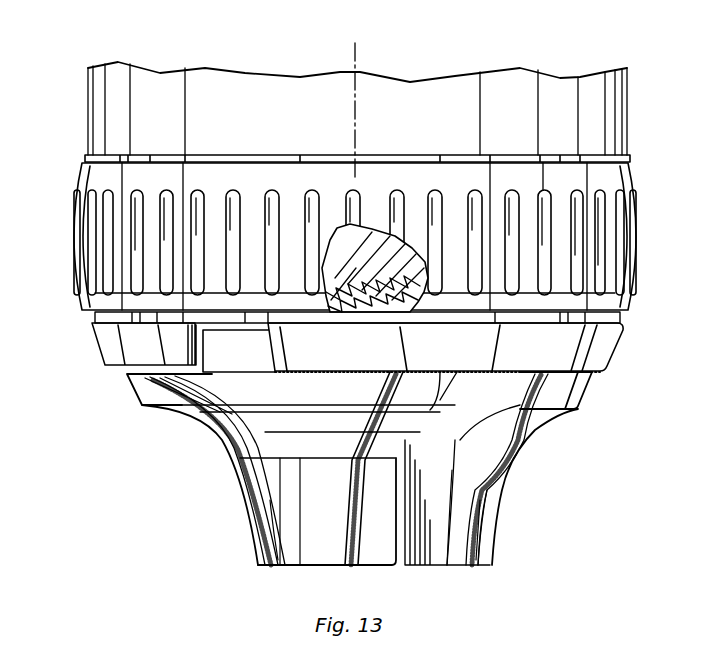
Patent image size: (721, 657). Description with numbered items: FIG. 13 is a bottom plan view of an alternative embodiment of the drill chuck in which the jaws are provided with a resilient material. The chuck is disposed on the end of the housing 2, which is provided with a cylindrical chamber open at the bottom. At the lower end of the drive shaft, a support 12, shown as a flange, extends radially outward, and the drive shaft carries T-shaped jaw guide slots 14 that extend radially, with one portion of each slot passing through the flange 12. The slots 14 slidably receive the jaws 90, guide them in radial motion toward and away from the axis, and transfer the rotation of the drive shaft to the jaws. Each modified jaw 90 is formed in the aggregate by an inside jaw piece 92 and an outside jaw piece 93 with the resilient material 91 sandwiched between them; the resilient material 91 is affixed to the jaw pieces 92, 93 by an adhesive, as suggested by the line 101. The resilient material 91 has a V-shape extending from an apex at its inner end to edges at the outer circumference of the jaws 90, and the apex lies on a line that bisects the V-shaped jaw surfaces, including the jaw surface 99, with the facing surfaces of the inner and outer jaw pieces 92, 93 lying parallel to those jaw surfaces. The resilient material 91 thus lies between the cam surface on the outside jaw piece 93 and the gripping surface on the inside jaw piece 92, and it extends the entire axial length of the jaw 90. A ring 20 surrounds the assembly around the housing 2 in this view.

The housing 2 is at (357, 62).
The slotted ring 20 is at (652, 192).
The jaw guide slots 14 is at (190, 340).
The support 12 is at (615, 352).
The jaw 90 is at (228, 438).
The line 101 is at (365, 473).
The resilient material 91 is at (343, 512).
The inside jaw piece 92 is at (378, 558).
The outside jaw piece 93 is at (322, 555).
The jaw surface 99 is at (430, 548).